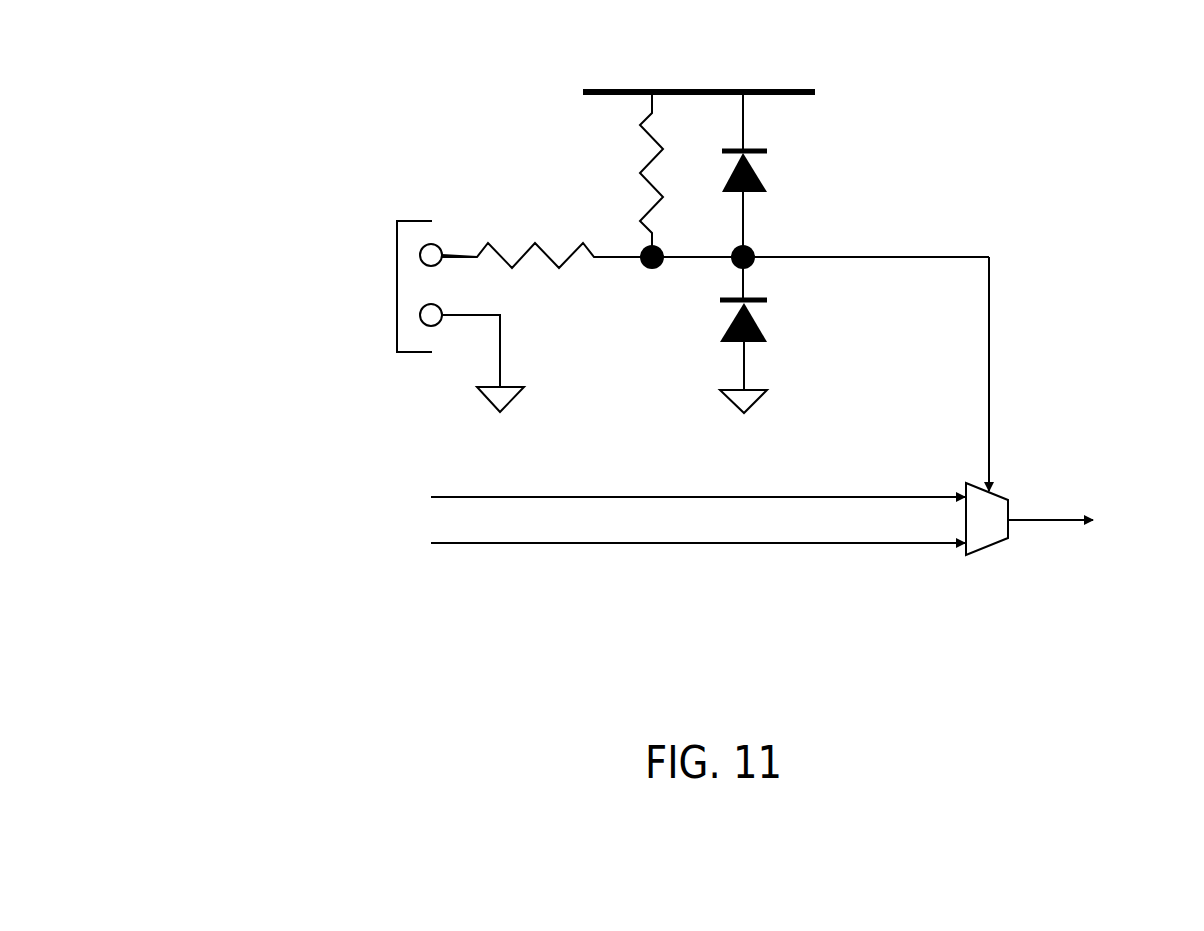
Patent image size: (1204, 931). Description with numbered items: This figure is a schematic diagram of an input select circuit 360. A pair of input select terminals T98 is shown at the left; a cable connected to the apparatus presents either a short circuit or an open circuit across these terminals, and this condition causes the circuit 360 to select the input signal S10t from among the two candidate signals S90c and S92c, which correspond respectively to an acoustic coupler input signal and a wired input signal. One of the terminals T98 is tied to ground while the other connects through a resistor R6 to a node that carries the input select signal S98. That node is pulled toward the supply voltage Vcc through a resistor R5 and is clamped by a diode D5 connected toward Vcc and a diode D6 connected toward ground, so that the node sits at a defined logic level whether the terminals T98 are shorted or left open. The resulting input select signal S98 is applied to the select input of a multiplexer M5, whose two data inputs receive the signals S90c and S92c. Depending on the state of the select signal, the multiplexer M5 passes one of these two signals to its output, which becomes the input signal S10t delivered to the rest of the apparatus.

The input select circuit 360 is at (1027, 58).
The input select signal S98 is at (454, 243).
The input select terminals T98 is at (373, 302).
The resistor R5 is at (630, 180).
The resistor R6 is at (547, 238).
The diode D5 is at (770, 180).
The diode D6 is at (769, 335).
The supply voltage Vcc is at (730, 98).
The acoustic coupler input signal S90c is at (620, 484).
The wired input signal S92c is at (636, 562).
The multiplexer M5 is at (1000, 532).
The input signal S10t is at (1045, 497).